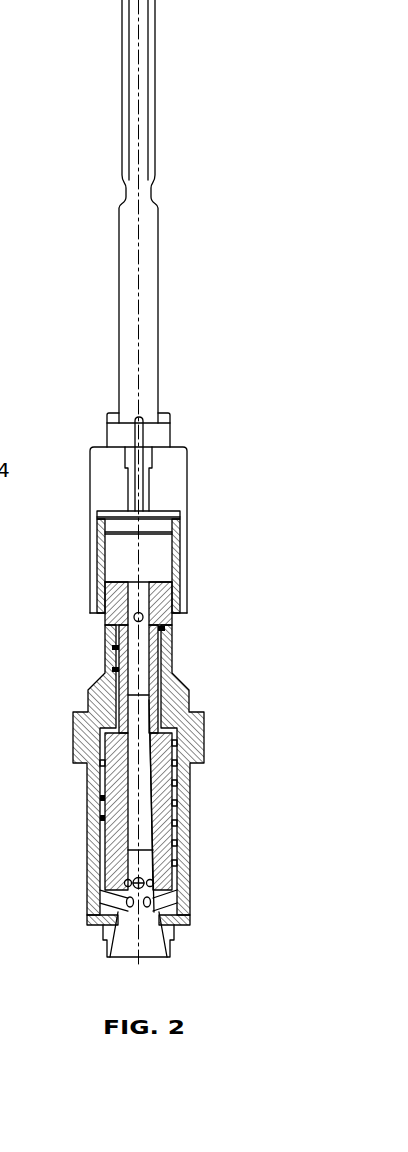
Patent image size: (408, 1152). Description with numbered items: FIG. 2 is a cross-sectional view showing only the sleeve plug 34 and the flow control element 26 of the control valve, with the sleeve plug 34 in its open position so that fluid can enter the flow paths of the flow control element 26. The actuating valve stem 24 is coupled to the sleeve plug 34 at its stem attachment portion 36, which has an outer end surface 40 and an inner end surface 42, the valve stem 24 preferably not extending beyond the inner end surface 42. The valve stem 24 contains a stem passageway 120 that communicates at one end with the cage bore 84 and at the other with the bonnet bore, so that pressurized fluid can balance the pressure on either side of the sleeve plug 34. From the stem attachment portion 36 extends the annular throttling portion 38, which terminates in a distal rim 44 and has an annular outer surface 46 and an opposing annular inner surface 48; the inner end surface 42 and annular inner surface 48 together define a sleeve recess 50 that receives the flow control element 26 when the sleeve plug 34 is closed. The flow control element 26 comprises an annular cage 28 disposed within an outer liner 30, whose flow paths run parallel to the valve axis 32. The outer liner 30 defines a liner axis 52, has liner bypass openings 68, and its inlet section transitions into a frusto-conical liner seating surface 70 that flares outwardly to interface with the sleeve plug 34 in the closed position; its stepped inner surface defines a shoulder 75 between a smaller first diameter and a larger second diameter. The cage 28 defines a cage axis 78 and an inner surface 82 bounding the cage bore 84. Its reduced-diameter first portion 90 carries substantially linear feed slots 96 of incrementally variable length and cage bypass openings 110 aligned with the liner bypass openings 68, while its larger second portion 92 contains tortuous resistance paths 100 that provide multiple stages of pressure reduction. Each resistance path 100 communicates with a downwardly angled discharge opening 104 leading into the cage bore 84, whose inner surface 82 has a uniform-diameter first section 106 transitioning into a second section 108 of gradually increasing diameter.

The actuating valve stem 24 is at (158, 300).
The flow control element 26 is at (149, 492).
The outer end surface 40 is at (177, 447).
The stem attachment portion 36 is at (178, 463).
The sleeve plug 34 is at (146, 513).
The stem passageway 120 is at (135, 446).
The inner end surface 42 is at (163, 523).
The annular outer surface 46 is at (90, 552).
The annular inner surface 48 is at (105, 575).
The sleeve recess 50 is at (158, 562).
The throttling portion 38 is at (188, 584).
The distal rim 44 is at (184, 620).
The first section 106 is at (162, 629).
The liner bypass openings 68 is at (89, 646).
The cage bypass openings 110 is at (133, 620).
The first portion 90 is at (118, 671).
The liner seating surface 70 is at (175, 678).
The outer liner 30 is at (138, 783).
The feed slots 96 is at (117, 703).
The shoulder 75 is at (183, 721).
The cage 28 is at (159, 752).
The inner surface 82 is at (147, 808).
The cage bore 84 is at (148, 832).
The tortuous resistance paths 100 is at (103, 800).
The second portion 92 is at (101, 817).
The second section 108 is at (152, 864).
The discharge opening 104 is at (172, 901).
The valve axis 32 is at (174, 948).
The liner axis 52 is at (174, 948).
The cage axis 78 is at (138, 964).